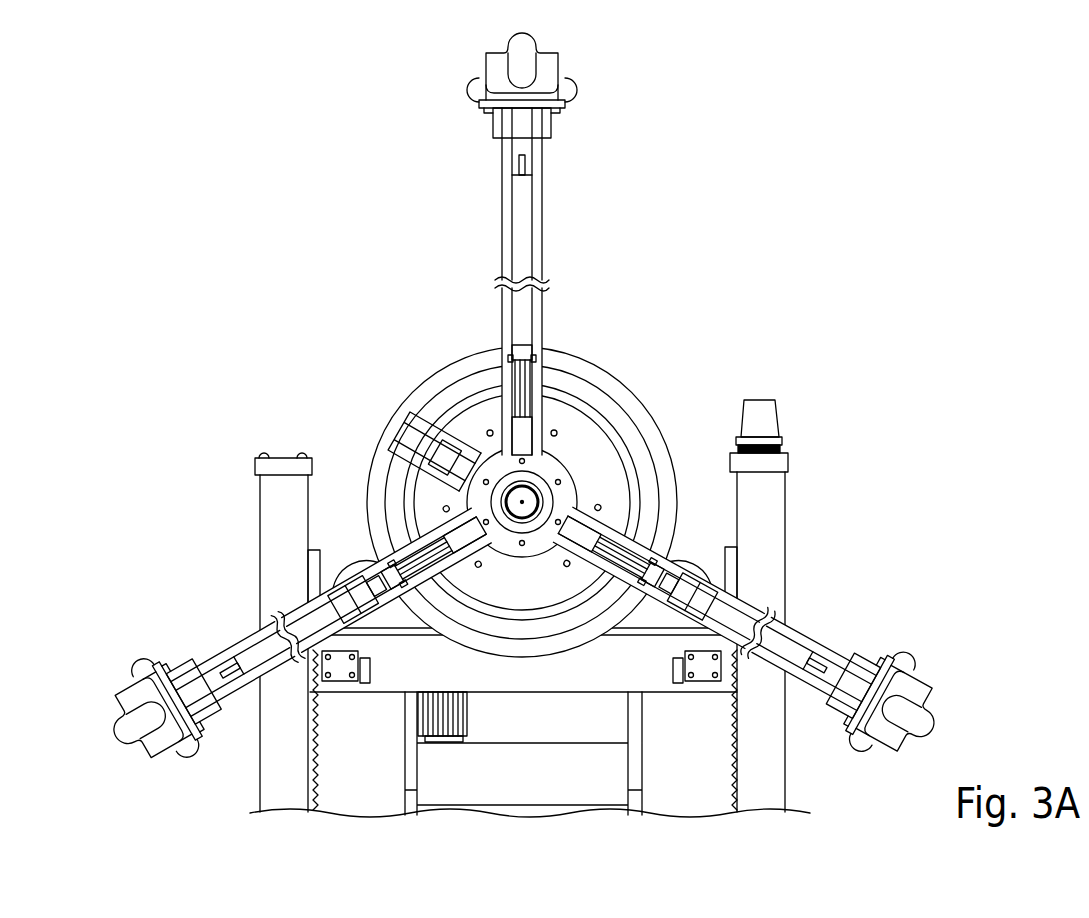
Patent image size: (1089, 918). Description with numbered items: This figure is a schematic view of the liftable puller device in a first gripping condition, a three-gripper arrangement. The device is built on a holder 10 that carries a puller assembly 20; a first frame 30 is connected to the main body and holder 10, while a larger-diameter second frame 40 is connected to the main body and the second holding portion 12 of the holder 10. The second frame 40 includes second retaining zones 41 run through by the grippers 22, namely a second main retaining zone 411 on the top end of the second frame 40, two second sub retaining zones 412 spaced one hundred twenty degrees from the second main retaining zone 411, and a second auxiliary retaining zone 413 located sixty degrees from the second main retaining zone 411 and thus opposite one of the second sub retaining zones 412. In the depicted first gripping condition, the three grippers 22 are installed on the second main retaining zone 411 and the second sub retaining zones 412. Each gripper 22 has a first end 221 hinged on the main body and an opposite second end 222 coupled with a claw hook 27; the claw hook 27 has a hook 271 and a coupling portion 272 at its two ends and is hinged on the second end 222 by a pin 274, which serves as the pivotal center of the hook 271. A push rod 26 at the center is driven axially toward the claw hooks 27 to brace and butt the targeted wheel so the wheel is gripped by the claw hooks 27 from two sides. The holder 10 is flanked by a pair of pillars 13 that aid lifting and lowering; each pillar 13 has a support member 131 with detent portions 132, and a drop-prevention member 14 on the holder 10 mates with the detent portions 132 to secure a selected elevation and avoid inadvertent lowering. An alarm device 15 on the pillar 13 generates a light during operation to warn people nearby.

The holder 10 is at (390, 680).
The second holding portion 12 is at (352, 572).
The pillar 13 is at (270, 515).
The support member 131 is at (732, 752).
The detent portion 132 is at (725, 692).
The drop-prevention member 14 is at (340, 670).
The alarm device 15 is at (762, 405).
The puller assembly 20 is at (580, 408).
The gripper 22 is at (546, 244).
The first end 221 is at (537, 347).
The second end 222 is at (540, 154).
The push rod 26 is at (528, 498).
The claw hook 27 is at (809, 626).
The hook 271 is at (920, 682).
The coupling portion 272 is at (858, 688).
The pin 274 is at (909, 682).
The first frame 30 is at (585, 410).
The second frame 40 is at (425, 395).
The second retaining zone 41 is at (497, 478).
The second main retaining zone 411 is at (492, 378).
The second sub retaining zone 412 is at (612, 515).
The second auxiliary retaining zone 413 is at (408, 432).